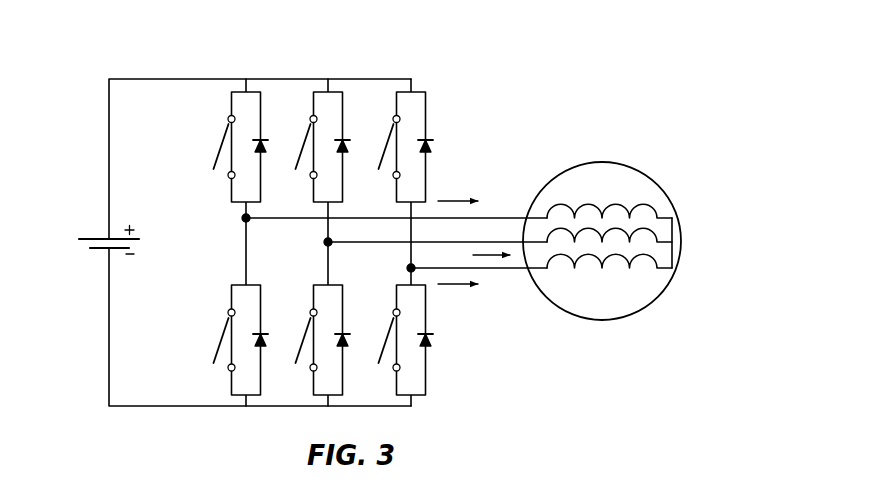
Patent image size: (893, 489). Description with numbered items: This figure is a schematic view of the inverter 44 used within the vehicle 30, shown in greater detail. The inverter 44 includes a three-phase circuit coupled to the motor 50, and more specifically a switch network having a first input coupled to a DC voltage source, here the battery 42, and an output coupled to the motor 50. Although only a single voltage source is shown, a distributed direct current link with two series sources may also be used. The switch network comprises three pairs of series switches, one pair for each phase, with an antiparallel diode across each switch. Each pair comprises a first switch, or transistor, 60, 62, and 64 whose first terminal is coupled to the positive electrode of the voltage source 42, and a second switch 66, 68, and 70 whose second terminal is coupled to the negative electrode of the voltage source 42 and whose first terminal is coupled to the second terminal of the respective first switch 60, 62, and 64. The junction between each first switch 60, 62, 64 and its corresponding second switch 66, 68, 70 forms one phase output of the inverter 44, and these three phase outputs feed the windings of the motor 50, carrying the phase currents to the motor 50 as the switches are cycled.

The vehicle 30 is at (478, 63).
The battery 42 is at (93, 232).
The inverter 44 is at (167, 79).
The motor 50 is at (600, 163).
The first switch 60 is at (219, 139).
The first switch 62 is at (302, 139).
The first switch 64 is at (384, 139).
The second switch 66 is at (218, 333).
The second switch 68 is at (301, 333).
The second switch 70 is at (383, 333).